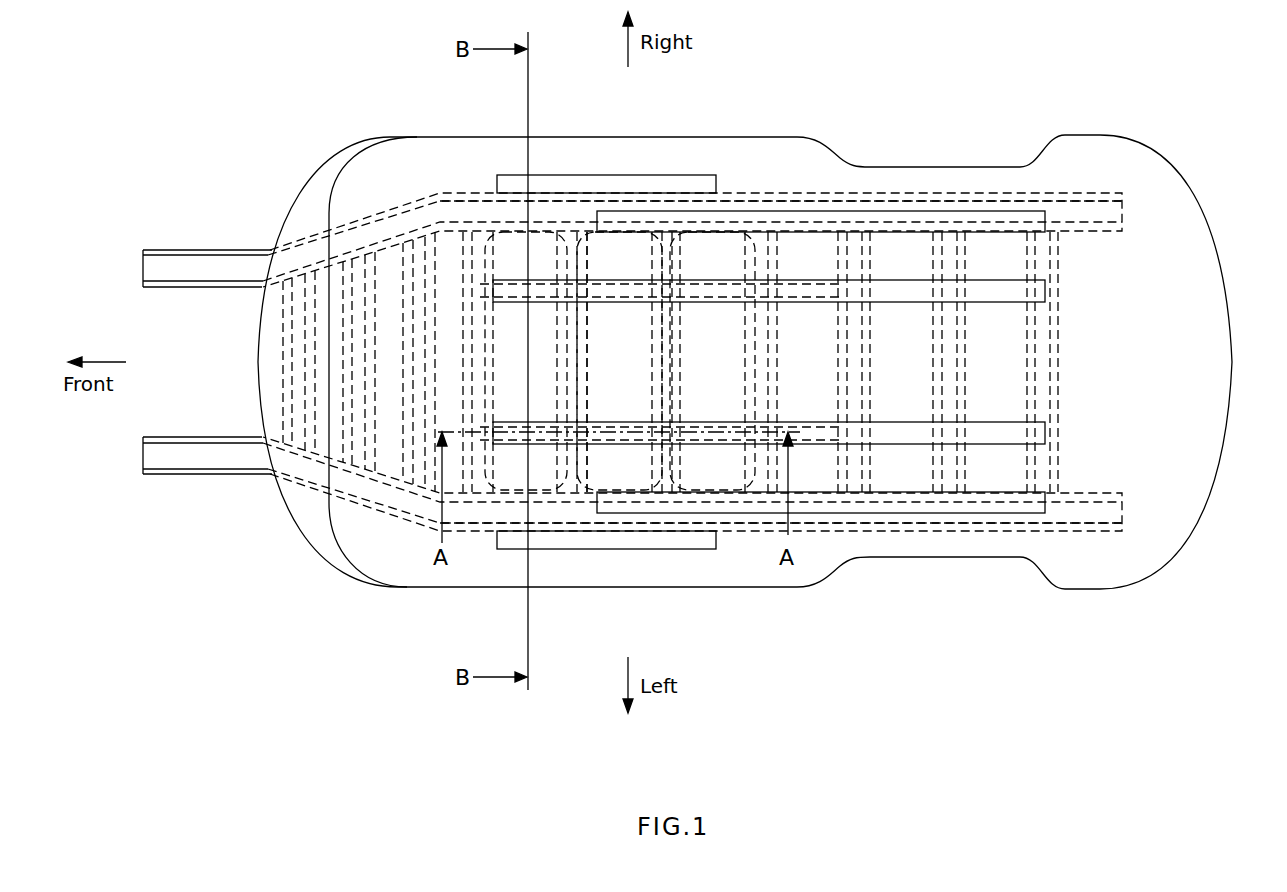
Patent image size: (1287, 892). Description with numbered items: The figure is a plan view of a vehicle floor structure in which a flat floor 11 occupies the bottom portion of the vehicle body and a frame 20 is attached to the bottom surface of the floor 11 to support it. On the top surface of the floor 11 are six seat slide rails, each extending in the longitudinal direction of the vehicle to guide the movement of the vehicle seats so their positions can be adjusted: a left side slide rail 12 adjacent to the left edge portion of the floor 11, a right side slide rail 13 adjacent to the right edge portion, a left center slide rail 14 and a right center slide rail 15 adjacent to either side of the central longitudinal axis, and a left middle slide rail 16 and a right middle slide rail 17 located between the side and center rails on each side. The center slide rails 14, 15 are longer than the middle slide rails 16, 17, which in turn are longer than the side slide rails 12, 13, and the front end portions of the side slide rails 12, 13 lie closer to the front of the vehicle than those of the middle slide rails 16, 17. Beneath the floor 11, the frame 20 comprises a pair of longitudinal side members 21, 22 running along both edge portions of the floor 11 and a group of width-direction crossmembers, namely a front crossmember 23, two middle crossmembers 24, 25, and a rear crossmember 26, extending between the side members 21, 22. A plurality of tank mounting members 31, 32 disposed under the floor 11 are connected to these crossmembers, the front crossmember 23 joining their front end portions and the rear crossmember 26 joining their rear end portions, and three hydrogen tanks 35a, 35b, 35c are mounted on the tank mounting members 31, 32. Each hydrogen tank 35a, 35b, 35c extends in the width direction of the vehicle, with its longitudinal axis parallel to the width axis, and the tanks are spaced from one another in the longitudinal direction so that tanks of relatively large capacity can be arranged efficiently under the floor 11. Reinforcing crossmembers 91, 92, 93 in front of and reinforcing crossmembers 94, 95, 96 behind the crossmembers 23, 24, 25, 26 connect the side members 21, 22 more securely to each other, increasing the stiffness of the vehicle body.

The floor 11 is at (268, 329).
The left side slide rail 12 is at (607, 175).
The right side slide rail 13 is at (607, 550).
The left center slide rail 14 is at (535, 280).
The right center slide rail 15 is at (515, 444).
The left middle slide rail 16 is at (810, 211).
The right middle slide rail 17 is at (812, 514).
The frame 20 is at (412, 525).
The side member 21 is at (478, 195).
The side member 22 is at (477, 530).
The front crossmember 23 is at (463, 228).
The middle crossmember 24 is at (574, 232).
The middle crossmember 25 is at (667, 232).
The rear crossmember 26 is at (755, 236).
The tank mounting member 31 is at (478, 292).
The tank mounting member 32 is at (458, 500).
The hydrogen tank 35a is at (482, 368).
The hydrogen tank 35b is at (637, 490).
The hydrogen tank 35c is at (757, 492).
The reinforcing crossmember 91 is at (297, 353).
The reinforcing crossmember 92 is at (360, 403).
The reinforcing crossmember 93 is at (420, 420).
The reinforcing crossmember 94 is at (853, 463).
The reinforcing crossmember 95 is at (950, 463).
The reinforcing crossmember 96 is at (1042, 458).